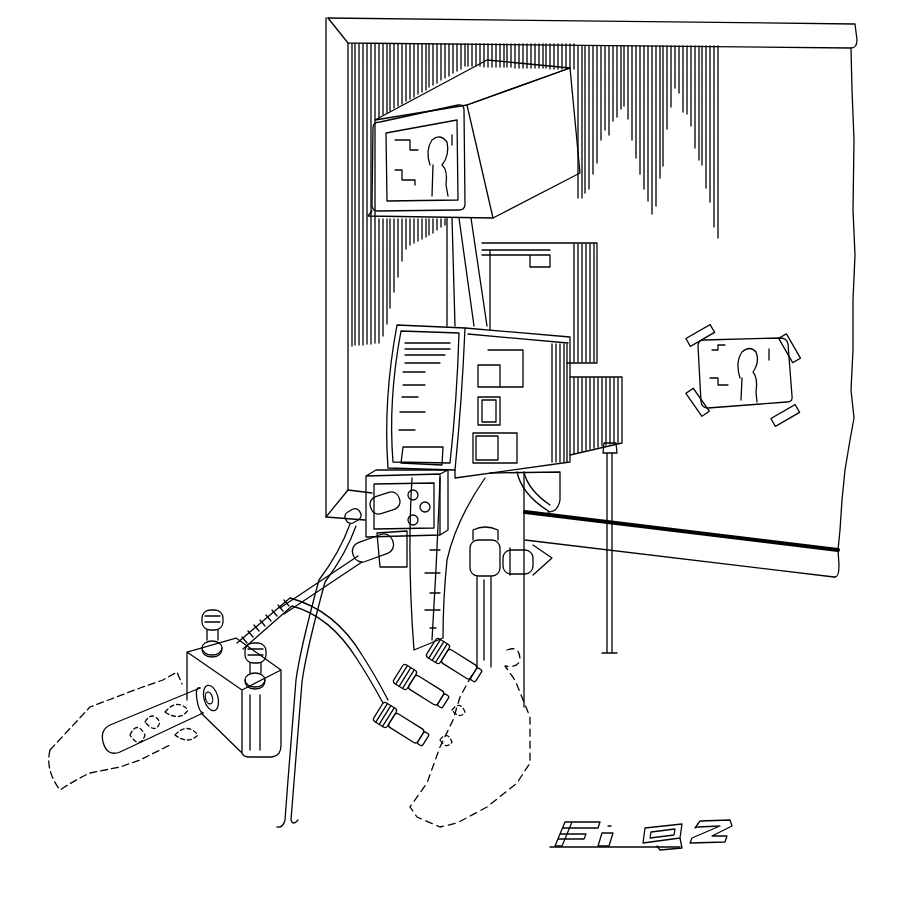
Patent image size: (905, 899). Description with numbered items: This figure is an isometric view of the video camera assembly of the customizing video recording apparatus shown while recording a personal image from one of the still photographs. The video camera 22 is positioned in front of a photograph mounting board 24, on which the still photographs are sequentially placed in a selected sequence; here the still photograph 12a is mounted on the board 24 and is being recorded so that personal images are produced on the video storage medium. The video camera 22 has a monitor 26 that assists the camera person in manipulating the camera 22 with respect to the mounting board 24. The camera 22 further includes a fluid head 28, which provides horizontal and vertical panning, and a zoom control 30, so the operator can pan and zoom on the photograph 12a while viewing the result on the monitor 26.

The still photograph 12a is at (726, 337).
The video camera 22 is at (594, 417).
The photograph mounting board 24 is at (770, 516).
The monitor 26 is at (518, 182).
The fluid head 28 is at (507, 625).
The zoom control 30 is at (430, 723).